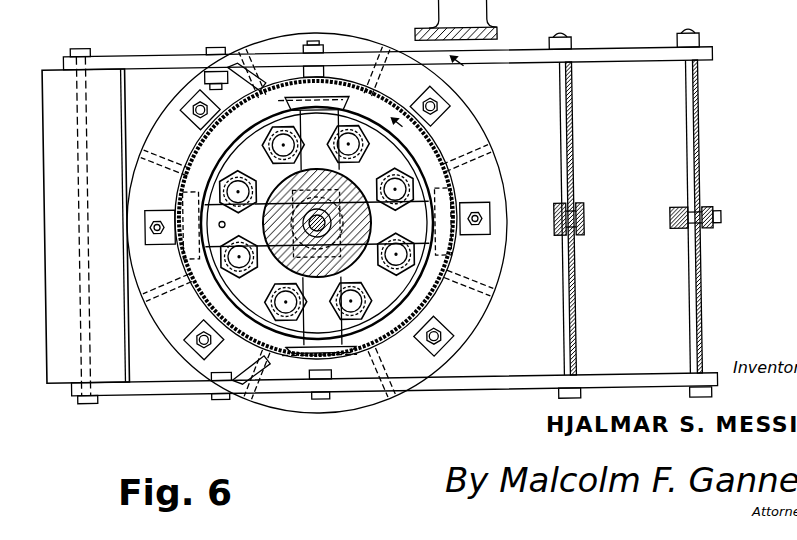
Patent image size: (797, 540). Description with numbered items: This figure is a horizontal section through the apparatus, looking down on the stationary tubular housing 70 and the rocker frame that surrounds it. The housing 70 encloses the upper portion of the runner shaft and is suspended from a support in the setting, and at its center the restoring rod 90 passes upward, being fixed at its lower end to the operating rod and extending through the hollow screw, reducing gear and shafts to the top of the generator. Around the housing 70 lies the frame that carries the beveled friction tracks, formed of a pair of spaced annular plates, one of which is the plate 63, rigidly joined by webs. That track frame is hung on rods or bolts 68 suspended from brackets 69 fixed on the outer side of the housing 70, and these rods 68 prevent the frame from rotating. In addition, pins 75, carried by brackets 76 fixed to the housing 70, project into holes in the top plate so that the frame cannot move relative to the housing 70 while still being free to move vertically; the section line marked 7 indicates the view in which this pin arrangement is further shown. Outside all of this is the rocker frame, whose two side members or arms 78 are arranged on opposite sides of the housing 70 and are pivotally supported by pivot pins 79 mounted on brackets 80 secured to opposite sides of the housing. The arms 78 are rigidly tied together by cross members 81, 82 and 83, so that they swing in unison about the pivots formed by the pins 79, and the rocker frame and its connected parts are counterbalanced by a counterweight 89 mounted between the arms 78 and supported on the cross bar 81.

The section line 7- 7 is at (433, 102).
The annular plate 63 is at (506, 41).
The rods or bolts 68 is at (164, 210).
The brackets 69 is at (168, 241).
The tubular housing 70 is at (183, 296).
The pins 75 is at (194, 101).
The brackets 76 is at (185, 115).
The side members or arms 78 is at (628, 62).
The pivot pins 79 is at (216, 62).
The brackets 80 is at (263, 43).
The cross member 81 is at (91, 44).
The cross member 82 is at (574, 147).
The cross member 83 is at (700, 149).
The counterweight 89 is at (85, 226).
The restoring rod 90 is at (320, 198).